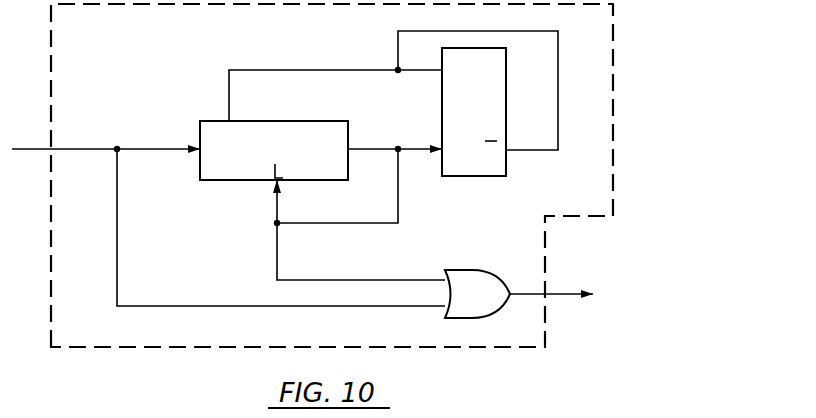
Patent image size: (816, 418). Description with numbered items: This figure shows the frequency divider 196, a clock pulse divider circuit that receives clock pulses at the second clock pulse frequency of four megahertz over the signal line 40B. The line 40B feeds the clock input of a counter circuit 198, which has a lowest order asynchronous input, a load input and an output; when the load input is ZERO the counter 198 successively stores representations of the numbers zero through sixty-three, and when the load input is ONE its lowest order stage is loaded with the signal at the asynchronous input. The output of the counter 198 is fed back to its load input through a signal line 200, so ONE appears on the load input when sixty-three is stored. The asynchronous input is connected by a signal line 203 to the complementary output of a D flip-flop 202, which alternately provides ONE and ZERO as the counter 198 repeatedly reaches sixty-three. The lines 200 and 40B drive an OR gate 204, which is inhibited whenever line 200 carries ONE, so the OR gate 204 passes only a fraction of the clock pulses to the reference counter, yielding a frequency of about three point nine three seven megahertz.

The signal line 40B is at (86, 148).
The frequency divider 196 is at (613, 57).
The counter circuit 198 is at (305, 120).
The signal line 200 is at (379, 148).
The D flip-flop 202 is at (506, 167).
The signal line 203 is at (305, 70).
The OR gate 204 is at (460, 268).